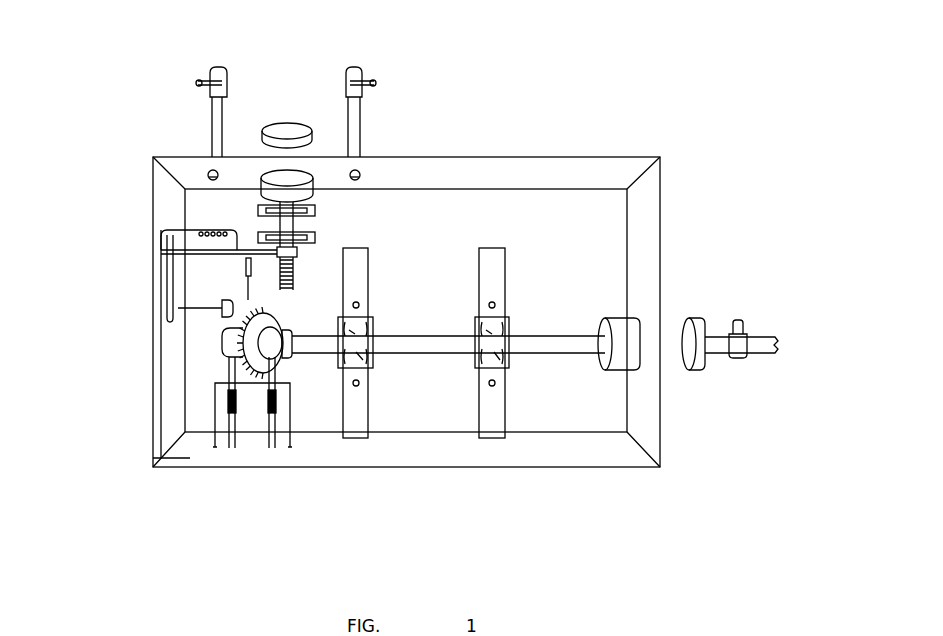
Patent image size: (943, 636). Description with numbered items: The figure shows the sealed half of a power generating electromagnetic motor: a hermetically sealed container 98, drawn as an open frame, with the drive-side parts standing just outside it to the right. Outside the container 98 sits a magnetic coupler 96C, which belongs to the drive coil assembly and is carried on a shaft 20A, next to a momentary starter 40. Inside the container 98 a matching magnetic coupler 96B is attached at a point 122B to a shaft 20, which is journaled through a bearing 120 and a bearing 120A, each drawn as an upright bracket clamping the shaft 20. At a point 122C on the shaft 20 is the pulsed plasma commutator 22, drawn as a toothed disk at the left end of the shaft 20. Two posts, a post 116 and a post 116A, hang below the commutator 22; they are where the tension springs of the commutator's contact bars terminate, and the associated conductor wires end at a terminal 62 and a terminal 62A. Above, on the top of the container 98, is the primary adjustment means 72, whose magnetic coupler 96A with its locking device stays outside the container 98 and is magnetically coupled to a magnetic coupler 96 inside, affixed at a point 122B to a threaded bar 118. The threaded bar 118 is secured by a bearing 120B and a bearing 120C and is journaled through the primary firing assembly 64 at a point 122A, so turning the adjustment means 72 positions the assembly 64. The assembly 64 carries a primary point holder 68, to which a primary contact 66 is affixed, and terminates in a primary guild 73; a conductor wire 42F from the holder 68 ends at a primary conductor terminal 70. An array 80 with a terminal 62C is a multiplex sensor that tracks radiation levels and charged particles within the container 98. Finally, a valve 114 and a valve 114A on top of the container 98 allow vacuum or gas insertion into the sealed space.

The valve 114 is at (213, 68).
The valve 114A is at (355, 68).
The point 122B is at (211, 172).
The magnetic coupler 96A is at (287, 124).
The magnetic coupler 96 is at (301, 180).
The primary adjustment means 72 is at (298, 288).
The threaded bar 118 is at (313, 206).
The primary firing assembly 64 is at (313, 237).
The bearing 120B is at (259, 207).
The bearing 120C is at (259, 233).
The conductor wire 42F is at (210, 227).
The point 122A is at (183, 251).
The primary conductor terminal 70 is at (190, 480).
The primary point holder 68 is at (172, 261).
The primary guild 73 is at (168, 272).
The primary contact 66 is at (247, 290).
The terminal 62C is at (152, 310).
The array 80 is at (224, 320).
The pulsed plasma commutator 22 is at (237, 344).
The point 122C is at (293, 350).
The post 116 is at (232, 450).
The post 116A is at (273, 450).
The terminal 62 is at (215, 480).
The terminal 62A is at (292, 480).
The shaft 20 is at (556, 340).
The bearing 120A is at (362, 357).
The bearing 120 is at (500, 363).
The magnetic coupler 96B is at (625, 348).
The hermetically sealed container 98 is at (640, 466).
The magnetic coupler 96C is at (697, 317).
The shaft 20A is at (770, 333).
The momentary starter 40 is at (739, 318).